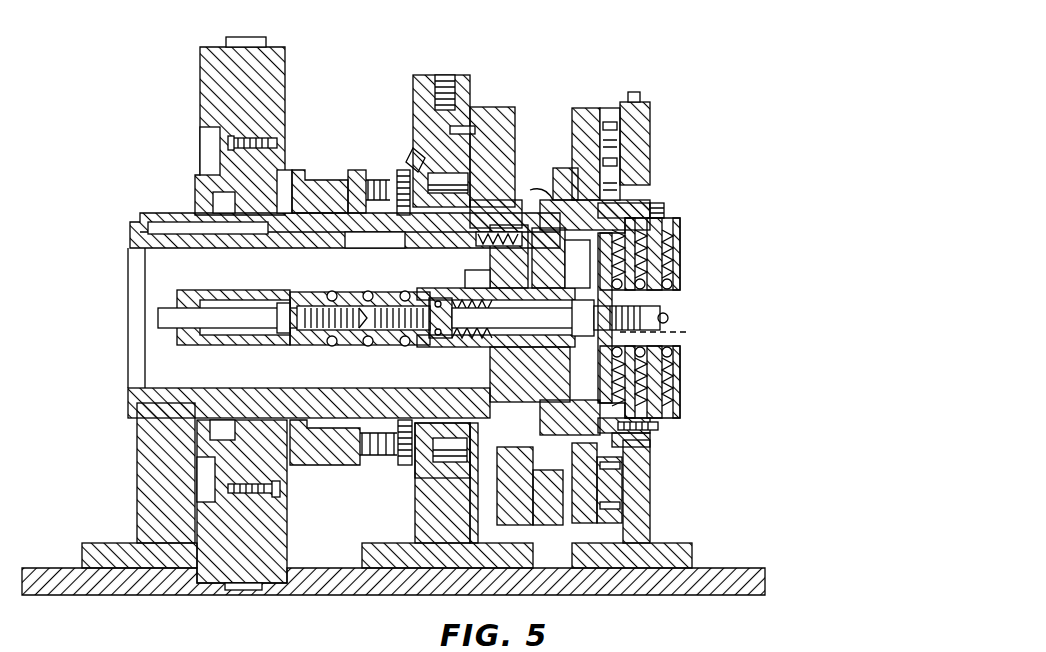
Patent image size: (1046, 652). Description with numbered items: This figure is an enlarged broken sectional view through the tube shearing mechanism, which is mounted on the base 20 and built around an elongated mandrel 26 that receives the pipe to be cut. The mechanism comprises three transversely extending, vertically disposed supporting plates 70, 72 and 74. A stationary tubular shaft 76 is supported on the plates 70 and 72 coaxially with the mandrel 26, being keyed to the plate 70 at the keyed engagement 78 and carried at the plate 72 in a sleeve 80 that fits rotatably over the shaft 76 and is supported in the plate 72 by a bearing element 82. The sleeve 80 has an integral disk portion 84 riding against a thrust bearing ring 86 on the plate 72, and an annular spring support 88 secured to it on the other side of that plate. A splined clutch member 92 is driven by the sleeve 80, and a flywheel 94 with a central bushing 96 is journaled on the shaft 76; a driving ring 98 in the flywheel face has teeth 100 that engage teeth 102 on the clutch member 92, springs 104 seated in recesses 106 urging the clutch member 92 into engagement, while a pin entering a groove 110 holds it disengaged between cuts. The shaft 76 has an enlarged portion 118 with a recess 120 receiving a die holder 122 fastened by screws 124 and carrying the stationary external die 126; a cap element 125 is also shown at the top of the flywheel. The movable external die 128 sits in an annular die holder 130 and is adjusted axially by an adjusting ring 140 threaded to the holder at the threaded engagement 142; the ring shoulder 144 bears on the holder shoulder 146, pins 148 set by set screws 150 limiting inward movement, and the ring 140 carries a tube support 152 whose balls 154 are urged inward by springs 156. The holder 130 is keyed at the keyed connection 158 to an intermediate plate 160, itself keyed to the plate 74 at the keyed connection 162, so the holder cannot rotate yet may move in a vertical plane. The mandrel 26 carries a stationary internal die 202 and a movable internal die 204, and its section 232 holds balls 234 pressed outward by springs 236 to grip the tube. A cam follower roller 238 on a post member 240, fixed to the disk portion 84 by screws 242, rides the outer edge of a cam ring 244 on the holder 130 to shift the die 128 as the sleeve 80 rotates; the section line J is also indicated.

The base 20 is at (152, 596).
The mandrel 26 is at (215, 347).
The supporting plate 70 is at (145, 445).
The supporting plate 72 is at (420, 520).
The supporting plate 74 is at (648, 500).
The stationary tubular shaft 76 is at (236, 250).
The keyed engagement 78 is at (130, 250).
The sleeve 80 is at (372, 290).
The bearing element 82 is at (425, 478).
The disk portion 84 is at (498, 122).
The thrust bearing ring 86 is at (470, 112).
The annular spring support 88 is at (402, 168).
The clutch member 92 is at (312, 180).
The flywheel 94 is at (205, 80).
The central bushing 96 is at (200, 210).
The driving ring 98 is at (265, 140).
The teeth 100 is at (296, 170).
The teeth 102 is at (294, 458).
The springs 104 is at (356, 190).
The recesses 106 is at (348, 246).
The groove 110 is at (355, 466).
The enlarged portion 118 is at (505, 190).
The recess 120 is at (478, 250).
The die holder 122 is at (515, 206).
The screws 124 is at (486, 268).
The cap 125 is at (252, 38).
The stationary external die 126 is at (468, 280).
The movable external die 128 is at (560, 286).
The annular die holder 130 is at (586, 101).
The adjusting ring 140 is at (640, 208).
The threaded engagement 142 is at (624, 458).
The annular shoulder 144 is at (530, 190).
The outwardly facing shoulder 146 is at (645, 205).
The pins 148 is at (645, 440).
The set screws 150 is at (650, 426).
The spring housing 152 is at (660, 282).
The balls 154 is at (640, 292).
The springs 156 is at (650, 260).
The keyed connection 158 is at (605, 120).
The intermediate plate 160 is at (636, 100).
The keyed connection 162 is at (680, 340).
The stationary internal die 202 is at (460, 344).
The movable internal die 204 is at (548, 350).
The mandrel section 232 is at (330, 290).
The balls 234 is at (365, 345).
The springs 236 is at (372, 345).
The cam follower roller 238 is at (566, 518).
The post member 240 is at (548, 525).
The screws 242 is at (505, 525).
The cam ring 244 is at (602, 468).
The section line J is at (375, 278).